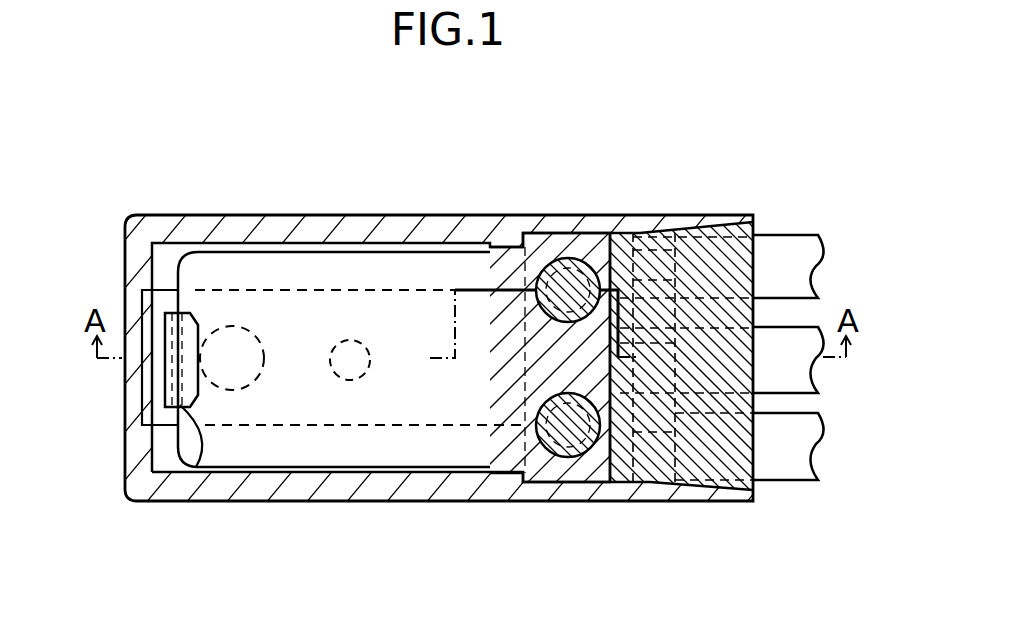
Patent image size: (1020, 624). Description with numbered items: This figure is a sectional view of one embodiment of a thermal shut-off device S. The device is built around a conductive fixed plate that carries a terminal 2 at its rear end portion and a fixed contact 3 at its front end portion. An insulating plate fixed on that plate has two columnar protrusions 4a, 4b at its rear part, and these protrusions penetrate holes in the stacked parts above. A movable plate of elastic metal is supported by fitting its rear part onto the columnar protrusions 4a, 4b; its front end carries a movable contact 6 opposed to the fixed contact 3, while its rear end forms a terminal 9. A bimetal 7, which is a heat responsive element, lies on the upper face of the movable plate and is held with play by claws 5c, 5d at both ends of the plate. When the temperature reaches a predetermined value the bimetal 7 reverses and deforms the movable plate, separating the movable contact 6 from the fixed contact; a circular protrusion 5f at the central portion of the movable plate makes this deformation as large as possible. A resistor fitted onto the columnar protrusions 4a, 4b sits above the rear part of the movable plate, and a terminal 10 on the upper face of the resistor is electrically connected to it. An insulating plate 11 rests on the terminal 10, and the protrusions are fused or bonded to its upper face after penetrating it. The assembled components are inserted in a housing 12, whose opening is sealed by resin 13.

The switch S is at (421, 182).
The housing 12 is at (329, 215).
The bimetal 7 is at (232, 456).
The claw 5d is at (506, 240).
The columnar protrusion 4a is at (562, 258).
The columnar protrusion 4b is at (568, 457).
The insulating plate 11 is at (603, 232).
The terminal 10 is at (650, 240).
The terminal 2 is at (645, 458).
The terminal 9 is at (767, 250).
The resin 13 is at (740, 315).
The fixed contact 3 is at (165, 410).
The claw 5c is at (186, 470).
The movable contact 6 is at (265, 372).
The circular protrusion 5f is at (350, 380).